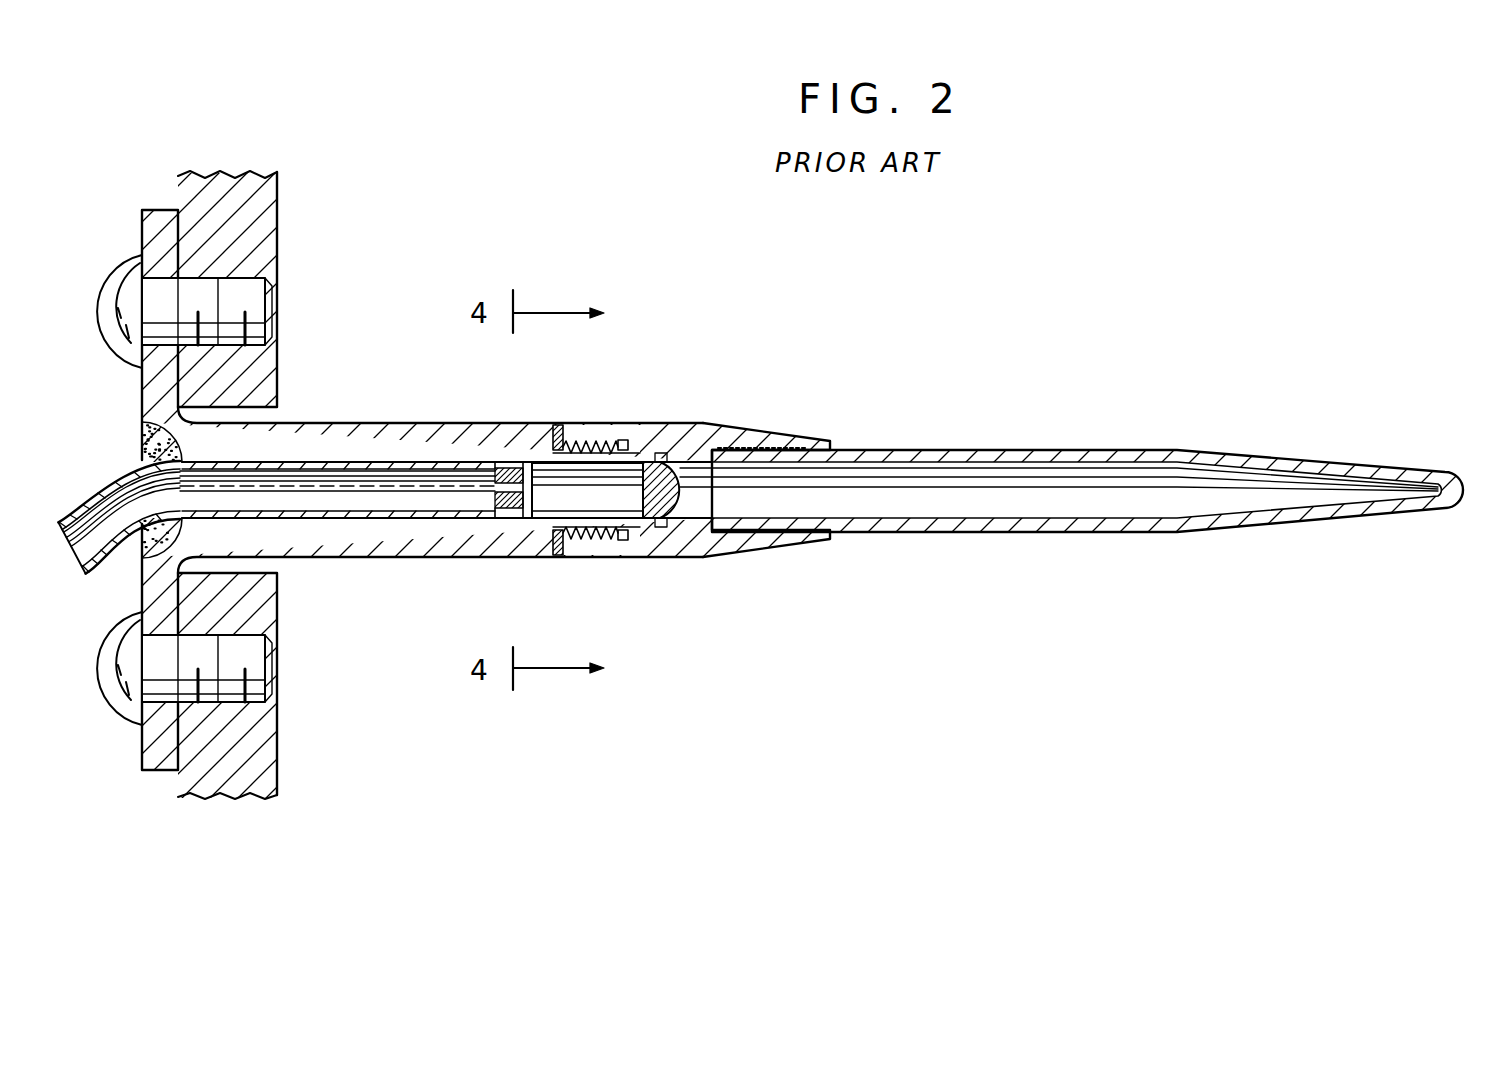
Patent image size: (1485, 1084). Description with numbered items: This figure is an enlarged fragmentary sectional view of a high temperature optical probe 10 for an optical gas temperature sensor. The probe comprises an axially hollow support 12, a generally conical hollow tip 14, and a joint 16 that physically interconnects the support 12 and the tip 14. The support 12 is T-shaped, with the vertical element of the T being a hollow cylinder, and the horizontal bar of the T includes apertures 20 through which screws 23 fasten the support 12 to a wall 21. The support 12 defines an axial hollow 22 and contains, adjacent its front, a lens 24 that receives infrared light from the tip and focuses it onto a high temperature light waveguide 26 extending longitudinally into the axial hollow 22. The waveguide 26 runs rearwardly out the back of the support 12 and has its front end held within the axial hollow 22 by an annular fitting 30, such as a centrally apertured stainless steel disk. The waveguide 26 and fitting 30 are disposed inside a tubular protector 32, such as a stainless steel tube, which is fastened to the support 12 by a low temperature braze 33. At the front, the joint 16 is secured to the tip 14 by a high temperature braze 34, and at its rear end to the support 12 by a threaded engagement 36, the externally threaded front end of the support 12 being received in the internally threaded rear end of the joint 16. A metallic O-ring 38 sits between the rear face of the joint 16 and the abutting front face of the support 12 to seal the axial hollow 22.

The high temperature optical probe 10 is at (393, 374).
The support 12 is at (429, 424).
The tip 14 is at (1019, 451).
The joint 16 is at (668, 422).
The apertures 20 is at (163, 277).
The wall 21 is at (256, 757).
The axial hollow 22 is at (600, 497).
The screws 23 is at (128, 364).
The lens 24 is at (678, 497).
The light waveguide 26 is at (350, 496).
The annular fitting 30 is at (508, 512).
The tubular protector 32 is at (118, 552).
The low temperature braze 33 is at (143, 460).
The high temperature braze 34 is at (736, 447).
The threaded engagement 36 is at (567, 434).
The metallic O-ring 38 is at (557, 558).